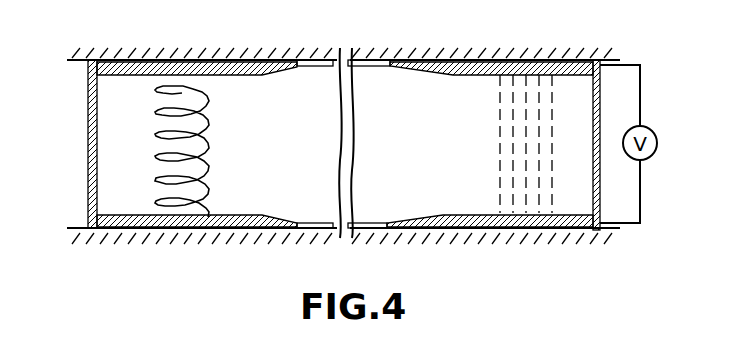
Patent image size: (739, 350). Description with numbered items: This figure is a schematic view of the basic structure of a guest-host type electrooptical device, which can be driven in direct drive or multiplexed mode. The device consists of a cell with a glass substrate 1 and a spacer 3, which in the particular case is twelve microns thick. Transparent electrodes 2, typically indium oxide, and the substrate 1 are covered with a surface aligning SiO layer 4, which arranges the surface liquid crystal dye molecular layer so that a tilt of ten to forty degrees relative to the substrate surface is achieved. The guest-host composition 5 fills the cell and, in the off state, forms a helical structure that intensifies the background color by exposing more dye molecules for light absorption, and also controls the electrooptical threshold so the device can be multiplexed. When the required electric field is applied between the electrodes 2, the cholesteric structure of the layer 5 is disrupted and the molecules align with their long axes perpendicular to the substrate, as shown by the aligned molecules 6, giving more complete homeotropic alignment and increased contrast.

The glass substrate 1 is at (76, 62).
The transparent electrodes 2 is at (181, 68).
The spacer 3 is at (88, 140).
The surface aligning SiO layer 4 is at (276, 62).
The guest-host composition 5 is at (222, 134).
The perpendicularly aligned molecules 6 is at (496, 128).